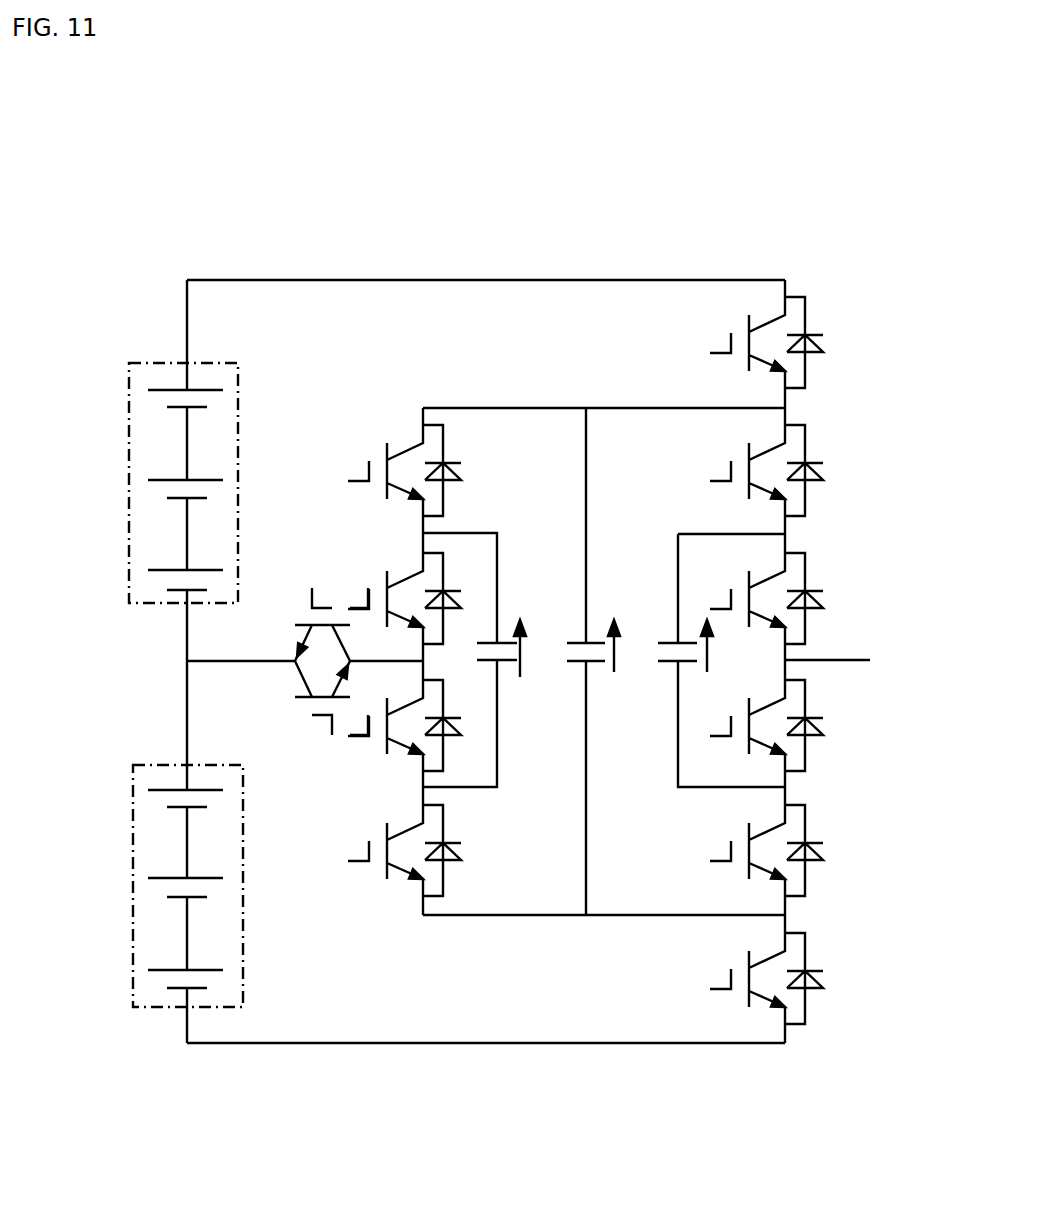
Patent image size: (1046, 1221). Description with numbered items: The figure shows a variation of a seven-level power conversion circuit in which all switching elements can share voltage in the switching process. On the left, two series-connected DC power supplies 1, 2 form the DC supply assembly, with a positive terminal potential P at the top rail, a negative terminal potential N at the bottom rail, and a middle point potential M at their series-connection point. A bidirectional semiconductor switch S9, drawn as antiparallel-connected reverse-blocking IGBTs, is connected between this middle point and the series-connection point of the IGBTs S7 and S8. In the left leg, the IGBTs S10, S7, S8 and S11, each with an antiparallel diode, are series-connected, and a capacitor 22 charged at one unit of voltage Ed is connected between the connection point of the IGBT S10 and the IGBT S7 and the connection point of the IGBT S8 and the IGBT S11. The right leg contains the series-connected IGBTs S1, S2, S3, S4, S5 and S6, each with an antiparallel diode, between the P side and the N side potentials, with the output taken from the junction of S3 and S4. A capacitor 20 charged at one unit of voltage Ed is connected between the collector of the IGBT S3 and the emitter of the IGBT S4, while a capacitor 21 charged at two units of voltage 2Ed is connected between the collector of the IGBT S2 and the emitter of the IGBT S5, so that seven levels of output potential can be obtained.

The DC power supply 1 is at (183, 462).
The DC power supply 2 is at (188, 867).
The capacitor 20 is at (711, 660).
The capacitor 21 is at (597, 661).
The capacitor 22 is at (478, 660).
The IGBT S1 is at (766, 337).
The IGBT S2 is at (766, 468).
The IGBT S3 is at (766, 594).
The IGBT S4 is at (766, 718).
The IGBT S5 is at (762, 850).
The IGBT S6 is at (762, 977).
The IGBT S7 is at (404, 587).
The IGBT S8 is at (404, 736).
The bidirectional semiconductor switch S9 is at (315, 661).
The IGBT S10 is at (404, 463).
The IGBT S11 is at (404, 863).